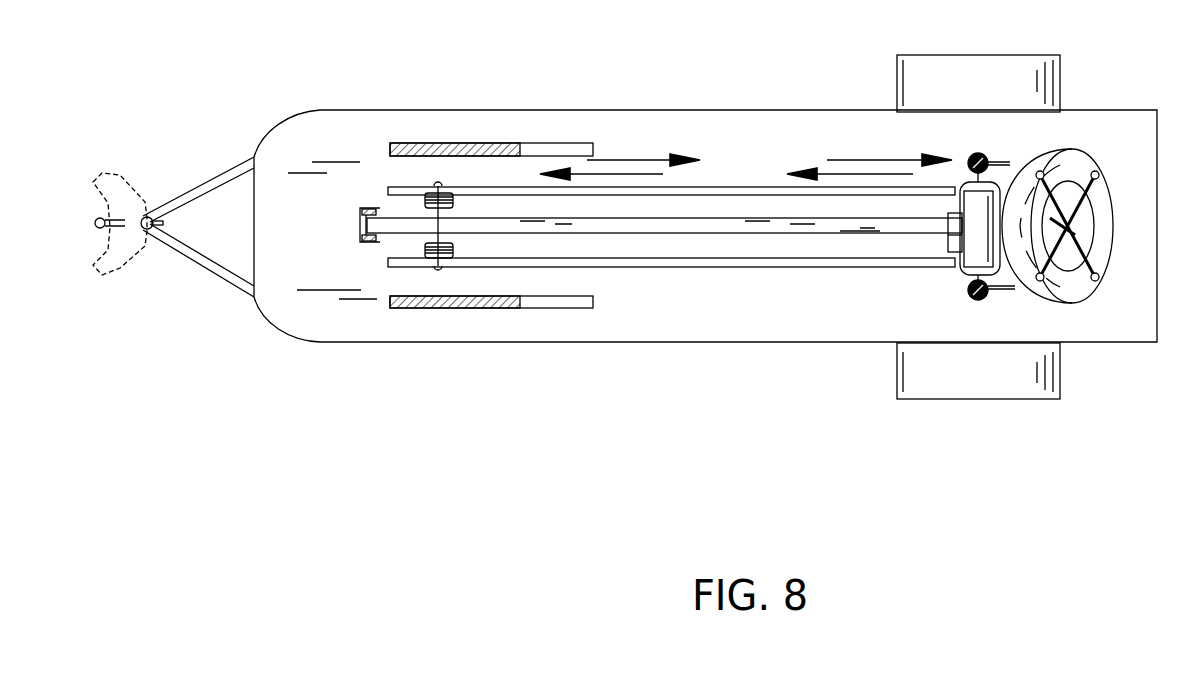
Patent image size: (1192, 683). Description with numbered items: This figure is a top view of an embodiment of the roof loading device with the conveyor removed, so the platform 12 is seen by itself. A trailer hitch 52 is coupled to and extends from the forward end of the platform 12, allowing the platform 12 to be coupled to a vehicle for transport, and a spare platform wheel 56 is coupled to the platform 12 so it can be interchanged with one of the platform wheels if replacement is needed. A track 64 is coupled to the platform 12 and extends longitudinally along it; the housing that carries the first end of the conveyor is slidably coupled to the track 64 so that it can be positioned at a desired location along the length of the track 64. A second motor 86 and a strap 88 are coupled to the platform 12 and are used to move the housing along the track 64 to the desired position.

The platform 12 is at (707, 122).
The trailer hitch 52 is at (131, 237).
The spare platform wheel 56 is at (1068, 165).
The track 64 is at (737, 192).
The second motor 86 is at (943, 247).
The strap 88 is at (385, 225).